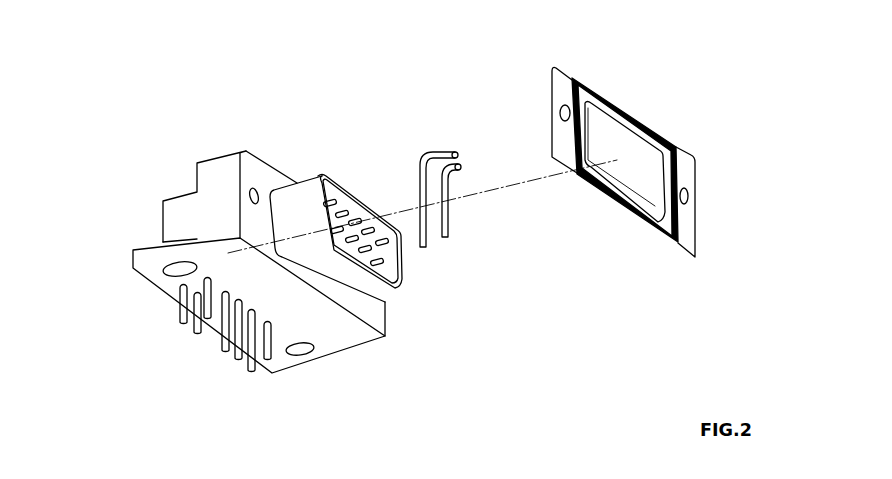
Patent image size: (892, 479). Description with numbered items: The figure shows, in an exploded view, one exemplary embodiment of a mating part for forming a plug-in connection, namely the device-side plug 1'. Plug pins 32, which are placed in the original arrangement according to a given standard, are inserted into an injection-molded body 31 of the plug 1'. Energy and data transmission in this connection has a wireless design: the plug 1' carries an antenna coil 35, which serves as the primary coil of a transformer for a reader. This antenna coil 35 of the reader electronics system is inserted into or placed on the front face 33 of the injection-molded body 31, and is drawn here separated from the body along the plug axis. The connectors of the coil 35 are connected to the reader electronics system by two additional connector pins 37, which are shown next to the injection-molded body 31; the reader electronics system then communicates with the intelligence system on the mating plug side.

The plug 1' is at (267, 304).
The injection-molded body 31 is at (218, 205).
The plug pins 32 is at (184, 315).
The front face 33 is at (257, 176).
The antenna coil 35 is at (590, 84).
The connector pins 37 is at (423, 235).